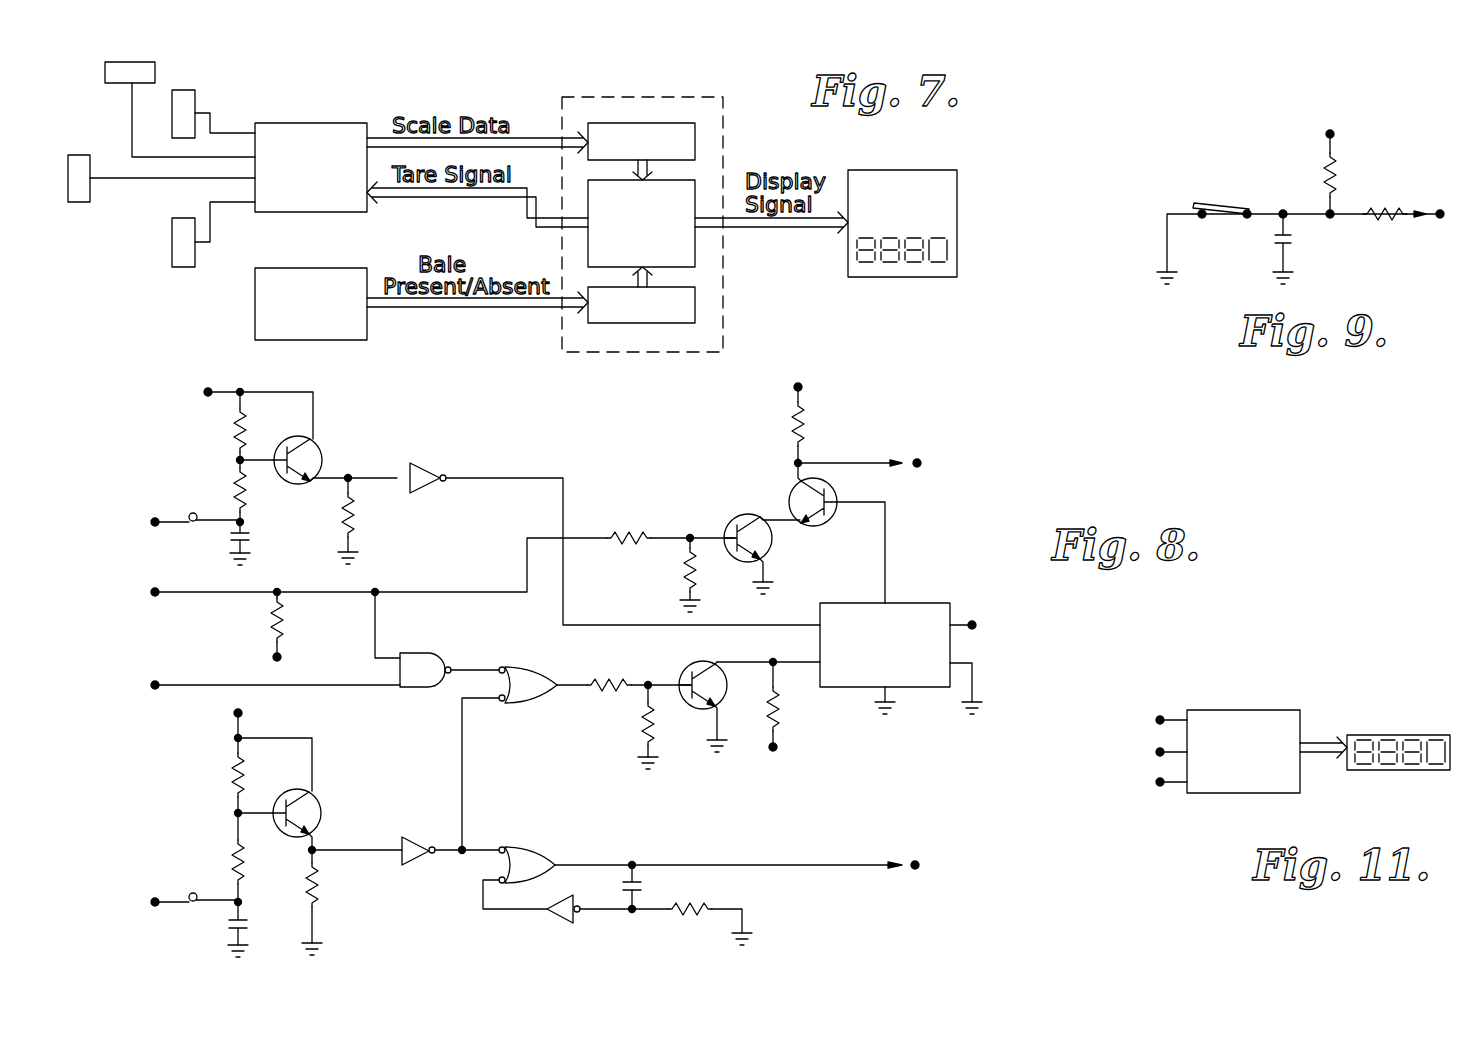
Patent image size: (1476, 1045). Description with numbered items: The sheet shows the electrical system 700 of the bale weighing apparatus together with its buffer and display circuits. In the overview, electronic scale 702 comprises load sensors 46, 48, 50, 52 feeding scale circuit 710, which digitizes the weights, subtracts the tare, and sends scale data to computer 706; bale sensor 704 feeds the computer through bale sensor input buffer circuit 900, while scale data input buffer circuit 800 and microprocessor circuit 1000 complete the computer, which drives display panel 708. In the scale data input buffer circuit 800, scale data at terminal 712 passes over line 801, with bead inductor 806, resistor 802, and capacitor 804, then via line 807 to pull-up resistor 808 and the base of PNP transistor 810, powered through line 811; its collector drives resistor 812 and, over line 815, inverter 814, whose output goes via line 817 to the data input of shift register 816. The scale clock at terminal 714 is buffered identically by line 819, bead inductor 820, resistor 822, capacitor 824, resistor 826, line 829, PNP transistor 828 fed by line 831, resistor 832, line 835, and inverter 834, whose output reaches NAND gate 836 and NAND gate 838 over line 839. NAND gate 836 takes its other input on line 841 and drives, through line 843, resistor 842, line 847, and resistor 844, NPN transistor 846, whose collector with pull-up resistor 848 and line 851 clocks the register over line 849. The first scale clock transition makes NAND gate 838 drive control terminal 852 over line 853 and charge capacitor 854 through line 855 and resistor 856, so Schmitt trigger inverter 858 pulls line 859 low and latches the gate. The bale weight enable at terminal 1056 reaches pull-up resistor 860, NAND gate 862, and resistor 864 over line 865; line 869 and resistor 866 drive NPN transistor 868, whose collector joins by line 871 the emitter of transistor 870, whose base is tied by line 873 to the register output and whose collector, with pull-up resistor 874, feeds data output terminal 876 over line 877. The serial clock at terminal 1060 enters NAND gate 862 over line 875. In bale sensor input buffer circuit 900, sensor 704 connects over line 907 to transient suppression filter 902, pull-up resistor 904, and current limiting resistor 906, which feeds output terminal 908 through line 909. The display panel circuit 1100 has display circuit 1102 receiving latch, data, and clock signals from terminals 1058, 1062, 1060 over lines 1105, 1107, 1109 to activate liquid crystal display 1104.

In FIG. 7, the load sensor 46 is at (105, 84).
In FIG. 7, the load sensor 48 is at (196, 88).
In FIG. 7, the load sensor 50 is at (185, 253).
In FIG. 7, the load sensor 52 is at (93, 197).
In FIG. 7, the electrical system 700 is at (830, 291).
In FIG. 7, the electronic scale 702 is at (311, 135).
In FIG. 7, the bale sensor 704 is at (299, 268).
In FIG. 9, the bale sensor 704 is at (1223, 218).
In FIG. 7, the computer 706 is at (722, 97).
In FIG. 7, the display panel 708 is at (957, 180).
In FIG. 7, the scale circuit 710 is at (270, 122).
In FIG. 8, the scale data terminal 712 is at (156, 517).
In FIG. 8, the scale clock terminal 714 is at (156, 896).
In FIG. 7, the scale data input buffer circuit 800 is at (695, 140).
In FIG. 8, the scale data input buffer circuit 800 is at (658, 457).
In FIG. 8, the line 801 is at (167, 524).
In FIG. 8, the resistor 802 is at (247, 492).
In FIG. 8, the capacitor 804 is at (252, 537).
In FIG. 8, the bead inductor 806 is at (214, 493).
In FIG. 8, the line 807 is at (259, 457).
In FIG. 8, the pull-up resistor 808 is at (233, 430).
In FIG. 8, the PNP transistor 810 is at (319, 448).
In FIG. 8, the line 811 is at (313, 392).
In FIG. 8, the resistor 812 is at (356, 521).
In FIG. 8, the inverter 814 is at (436, 463).
In FIG. 8, the line 815 is at (366, 478).
In FIG. 8, the shift register 816 is at (947, 603).
In FIG. 8, the line 817 is at (565, 480).
In FIG. 8, the line 819 is at (175, 906).
In FIG. 8, the bead inductor 820 is at (201, 889).
In FIG. 8, the resistor 822 is at (246, 859).
In FIG. 8, the capacitor 824 is at (258, 905).
In FIG. 8, the resistor 826 is at (232, 761).
In FIG. 8, the PNP transistor 828 is at (321, 811).
In FIG. 8, the line 829 is at (233, 814).
In FIG. 8, the line 831 is at (313, 741).
In FIG. 8, the resistor 832 is at (326, 901).
In FIG. 8, the inverter 834 is at (426, 831).
In FIG. 8, the line 835 is at (349, 851).
In FIG. 8, the NAND gate 836 is at (531, 704).
In FIG. 8, the NAND gate 838 is at (521, 847).
In FIG. 8, the line 839 is at (463, 768).
In FIG. 8, the line 841 is at (474, 669).
In FIG. 8, the resistor 842 is at (600, 695).
In FIG. 8, the line 843 is at (569, 673).
In FIG. 8, the resistor 844 is at (641, 735).
In FIG. 8, the NPN transistor 846 is at (698, 668).
In FIG. 8, the line 847 is at (666, 683).
In FIG. 8, the pull-up resistor 848 is at (782, 708).
In FIG. 8, the line 849 is at (746, 663).
In FIG. 8, the line 851 is at (777, 741).
In FIG. 8, the control terminal 852 is at (915, 860).
In FIG. 8, the line 853 is at (802, 864).
In FIG. 8, the capacitor 854 is at (641, 885).
In FIG. 8, the line 855 is at (610, 916).
In FIG. 8, the resistor 856 is at (691, 913).
In FIG. 8, the Schmitt trigger inverter 858 is at (556, 921).
In FIG. 8, the line 859 is at (483, 906).
In FIG. 8, the pull-up resistor 860 is at (283, 621).
In FIG. 8, the NAND gate 862 is at (413, 652).
In FIG. 8, the resistor 864 is at (629, 549).
In FIG. 8, the line 865 is at (443, 592).
In FIG. 8, the resistor 866 is at (682, 583).
In FIG. 8, the NPN transistor 868 is at (727, 514).
In FIG. 8, the line 869 is at (664, 537).
In FIG. 8, the transistor 870 is at (789, 494).
In FIG. 8, the line 871 is at (782, 522).
In FIG. 8, the line 873 is at (888, 528).
In FIG. 8, the pull-up resistor 874 is at (806, 415).
In FIG. 8, the line 875 is at (330, 693).
In FIG. 8, the data output terminal 876 is at (914, 459).
In FIG. 8, the line 877 is at (846, 467).
In FIG. 7, the bale sensor input buffer circuit 900 is at (695, 305).
In FIG. 9, the bale sensor input buffer circuit 900 is at (1287, 123).
In FIG. 9, the transient suppression filter 902 is at (1295, 243).
In FIG. 9, the pull-up resistor 904 is at (1338, 173).
In FIG. 9, the current limiting resistor 906 is at (1398, 212).
In FIG. 9, the line 907 is at (1305, 212).
In FIG. 9, the output terminal 908 is at (1440, 210).
In FIG. 9, the line 909 is at (1418, 218).
In FIG. 7, the microprocessor circuit 1000 is at (695, 248).
In FIG. 8, the bale weight enable terminal 1056 is at (158, 598).
In FIG. 11, the latch terminal 1058 is at (1161, 716).
In FIG. 11, the serial clock terminal 1060 is at (1162, 787).
In FIG. 8, the serial clock terminal 1060 is at (156, 690).
In FIG. 11, the data terminal 1062 is at (1168, 755).
In FIG. 11, the display panel circuit 1100 is at (1336, 650).
In FIG. 11, the display circuit 1102 is at (1275, 710).
In FIG. 11, the liquid crystal display 1104 is at (1377, 772).
In FIG. 11, the line 1105 is at (1174, 719).
In FIG. 11, the line 1107 is at (1168, 747).
In FIG. 11, the line 1109 is at (1177, 787).